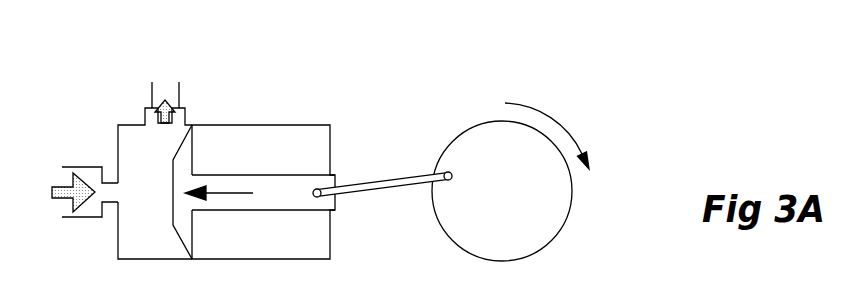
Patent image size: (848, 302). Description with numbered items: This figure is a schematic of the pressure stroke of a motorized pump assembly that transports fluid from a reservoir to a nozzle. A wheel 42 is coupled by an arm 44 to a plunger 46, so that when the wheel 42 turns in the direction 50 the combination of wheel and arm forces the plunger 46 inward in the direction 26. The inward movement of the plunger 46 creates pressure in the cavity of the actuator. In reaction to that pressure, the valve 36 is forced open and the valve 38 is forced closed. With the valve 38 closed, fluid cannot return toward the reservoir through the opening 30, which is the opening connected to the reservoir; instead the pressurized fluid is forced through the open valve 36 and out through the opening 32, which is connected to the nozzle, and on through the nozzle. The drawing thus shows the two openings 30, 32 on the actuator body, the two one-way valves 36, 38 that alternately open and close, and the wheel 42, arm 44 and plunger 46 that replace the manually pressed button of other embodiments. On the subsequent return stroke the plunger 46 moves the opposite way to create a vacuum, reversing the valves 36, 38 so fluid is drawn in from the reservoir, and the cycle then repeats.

The direction 26 is at (218, 188).
The opening 30 is at (170, 90).
The opening 32 is at (95, 203).
The valve 36 is at (66, 192).
The valve 38 is at (168, 97).
The wheel 42 is at (485, 122).
The arm 44 is at (383, 173).
The plunger 46 is at (272, 193).
The direction 50 is at (567, 122).